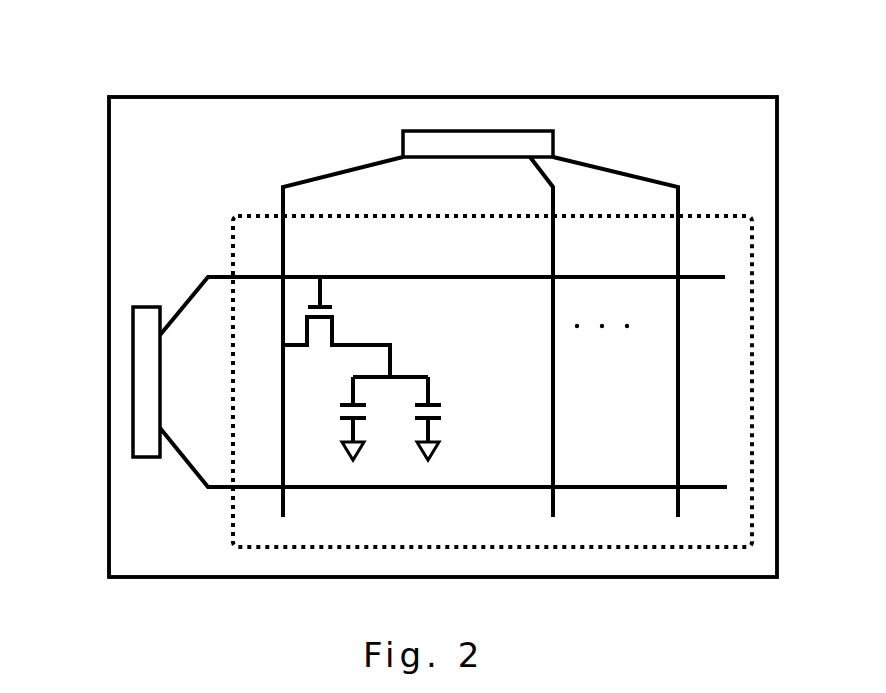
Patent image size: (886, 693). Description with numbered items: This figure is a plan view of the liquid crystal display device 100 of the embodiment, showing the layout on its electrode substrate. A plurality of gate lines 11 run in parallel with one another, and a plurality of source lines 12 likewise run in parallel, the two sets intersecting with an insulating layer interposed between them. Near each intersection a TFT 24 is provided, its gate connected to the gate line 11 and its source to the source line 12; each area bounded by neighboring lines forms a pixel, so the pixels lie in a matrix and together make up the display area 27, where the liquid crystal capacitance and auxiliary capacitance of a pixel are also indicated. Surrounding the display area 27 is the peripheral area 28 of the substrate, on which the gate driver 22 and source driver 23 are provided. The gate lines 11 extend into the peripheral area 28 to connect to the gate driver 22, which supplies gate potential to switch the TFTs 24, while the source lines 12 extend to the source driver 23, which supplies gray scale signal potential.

The gate line 11 is at (618, 487).
The source line 12 is at (553, 238).
The gate driver 22 is at (133, 332).
The source driver 23 is at (528, 131).
The TFT 24 is at (344, 314).
The display area 27 is at (753, 248).
The peripheral area 28 is at (727, 128).
The liquid crystal display device 100 is at (842, 609).